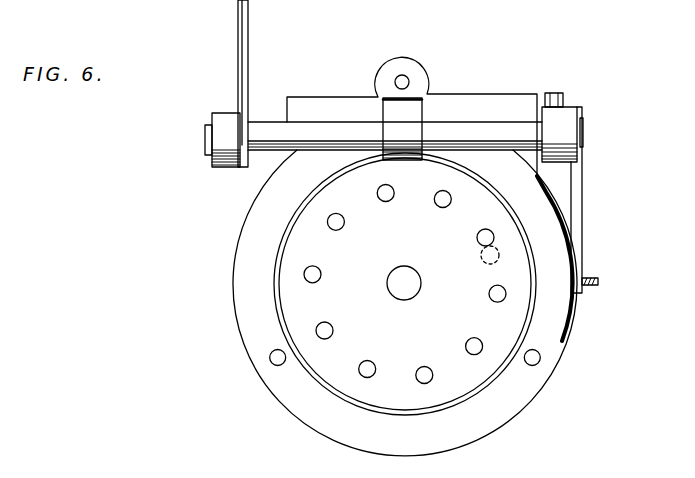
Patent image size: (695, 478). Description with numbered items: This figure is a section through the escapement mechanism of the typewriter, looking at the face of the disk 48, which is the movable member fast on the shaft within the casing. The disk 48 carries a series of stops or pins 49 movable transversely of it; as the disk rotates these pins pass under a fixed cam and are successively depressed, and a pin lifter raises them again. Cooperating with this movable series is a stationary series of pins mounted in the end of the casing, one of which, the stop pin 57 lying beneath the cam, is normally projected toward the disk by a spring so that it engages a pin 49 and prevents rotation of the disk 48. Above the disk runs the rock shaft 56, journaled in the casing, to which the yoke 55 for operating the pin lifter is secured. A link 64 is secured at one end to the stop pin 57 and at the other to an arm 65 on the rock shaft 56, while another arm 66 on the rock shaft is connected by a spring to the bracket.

The disk 48 is at (507, 322).
The stops or pins 49 is at (476, 349).
The yoke 55 is at (397, 118).
The rock shaft 56 is at (267, 122).
The stop pin 57 is at (503, 249).
The link 64 is at (600, 281).
The arm 65 is at (650, 240).
The arm 66 is at (238, 52).